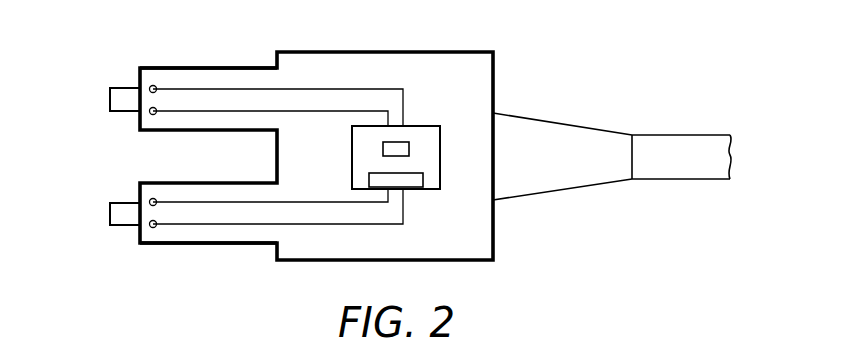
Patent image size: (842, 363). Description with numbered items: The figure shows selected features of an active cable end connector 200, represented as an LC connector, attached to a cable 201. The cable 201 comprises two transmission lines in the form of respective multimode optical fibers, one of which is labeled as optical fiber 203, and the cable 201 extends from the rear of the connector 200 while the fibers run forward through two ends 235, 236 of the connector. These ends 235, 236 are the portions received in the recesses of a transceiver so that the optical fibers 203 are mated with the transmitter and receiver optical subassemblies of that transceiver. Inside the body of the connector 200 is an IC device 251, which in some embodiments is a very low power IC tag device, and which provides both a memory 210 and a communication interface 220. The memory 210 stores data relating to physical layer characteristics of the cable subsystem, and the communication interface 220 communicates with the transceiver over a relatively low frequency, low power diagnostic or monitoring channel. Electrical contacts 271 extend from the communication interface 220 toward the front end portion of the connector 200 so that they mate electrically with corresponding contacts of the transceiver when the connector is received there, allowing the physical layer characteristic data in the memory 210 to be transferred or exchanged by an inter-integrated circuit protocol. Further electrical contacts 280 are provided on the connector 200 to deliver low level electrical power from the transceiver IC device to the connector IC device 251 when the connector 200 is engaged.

The cable end connector 200 is at (494, 52).
The cable 201 is at (680, 134).
The multimode optical fiber 203 is at (110, 97).
The memory 210 is at (383, 148).
The communication interface 220 is at (369, 176).
The end of the cable end connector 235 is at (176, 244).
The end of the cable end connector 236 is at (176, 67).
The IC device 251 is at (413, 127).
The electrical contacts 271 is at (262, 225).
The further electrical contacts 280 is at (262, 88).